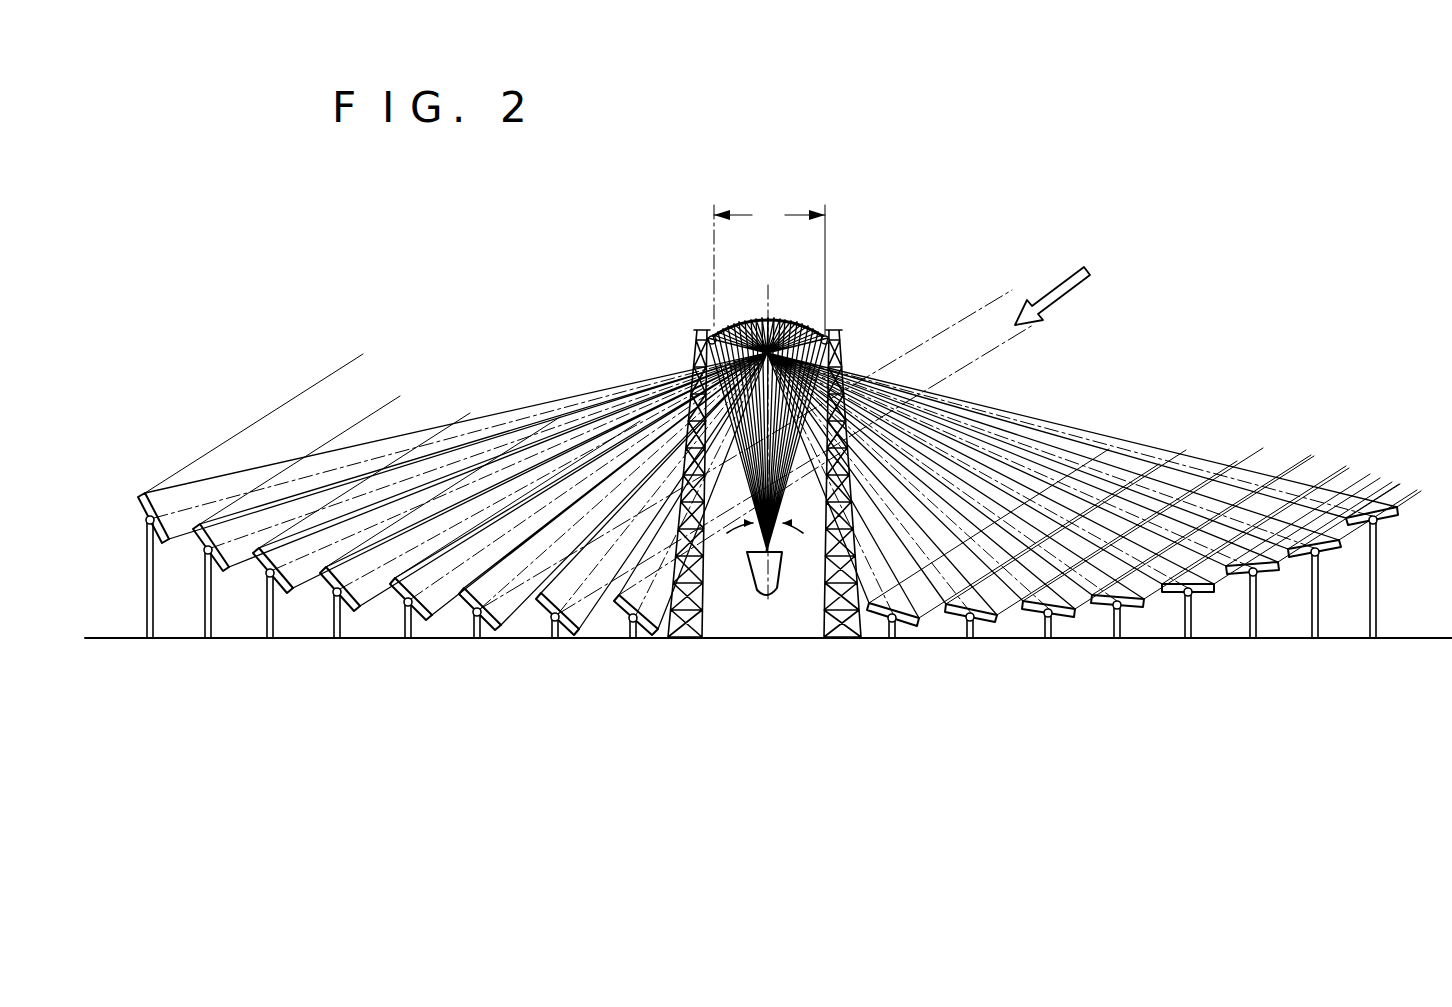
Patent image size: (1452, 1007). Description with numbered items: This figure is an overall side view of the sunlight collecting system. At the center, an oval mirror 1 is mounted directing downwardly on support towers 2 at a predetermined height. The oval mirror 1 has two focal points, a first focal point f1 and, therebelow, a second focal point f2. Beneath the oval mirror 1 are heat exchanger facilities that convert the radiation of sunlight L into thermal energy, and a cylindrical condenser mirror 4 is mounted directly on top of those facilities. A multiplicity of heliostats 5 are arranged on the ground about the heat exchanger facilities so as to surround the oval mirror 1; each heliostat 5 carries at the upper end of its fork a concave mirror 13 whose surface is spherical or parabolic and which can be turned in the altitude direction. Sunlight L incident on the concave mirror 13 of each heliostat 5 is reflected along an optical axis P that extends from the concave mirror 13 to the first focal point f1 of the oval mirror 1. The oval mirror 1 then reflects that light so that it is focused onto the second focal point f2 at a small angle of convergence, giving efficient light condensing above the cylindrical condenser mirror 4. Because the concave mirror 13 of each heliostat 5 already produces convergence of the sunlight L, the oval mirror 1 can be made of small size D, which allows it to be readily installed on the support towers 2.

The oval mirror 1 is at (778, 316).
The support towers 2 is at (670, 585).
The cylindrical condenser mirror 4 is at (765, 600).
The heliostats 5 is at (1375, 614).
The concave mirror 13 is at (1358, 520).
The first focal point f1 is at (760, 320).
The second focal point f2 is at (757, 596).
The optical axis P is at (394, 455).
The sunlight L is at (783, 411).
The size of the oval mirror D is at (769, 269).